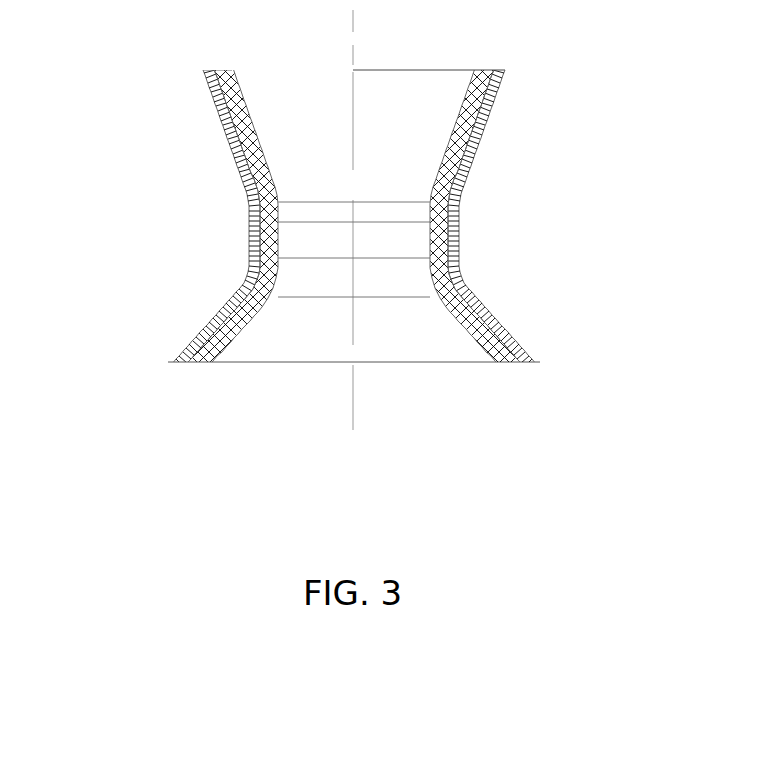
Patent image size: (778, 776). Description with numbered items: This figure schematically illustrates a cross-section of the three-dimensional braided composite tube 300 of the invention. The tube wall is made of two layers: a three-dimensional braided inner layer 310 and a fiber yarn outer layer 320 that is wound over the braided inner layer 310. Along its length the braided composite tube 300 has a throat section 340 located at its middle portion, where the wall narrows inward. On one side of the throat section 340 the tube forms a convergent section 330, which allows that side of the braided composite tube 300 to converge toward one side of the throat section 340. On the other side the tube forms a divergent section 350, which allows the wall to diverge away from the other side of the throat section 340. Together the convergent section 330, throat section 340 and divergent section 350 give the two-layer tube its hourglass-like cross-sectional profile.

The 3D braided composite tube 300 is at (247, 230).
The 3D braided inner layer 310 is at (507, 350).
The fiber yarn outer layer 320 is at (448, 233).
The convergent section 330 is at (453, 312).
The throat section 340 is at (425, 244).
The divergent section 350 is at (455, 135).